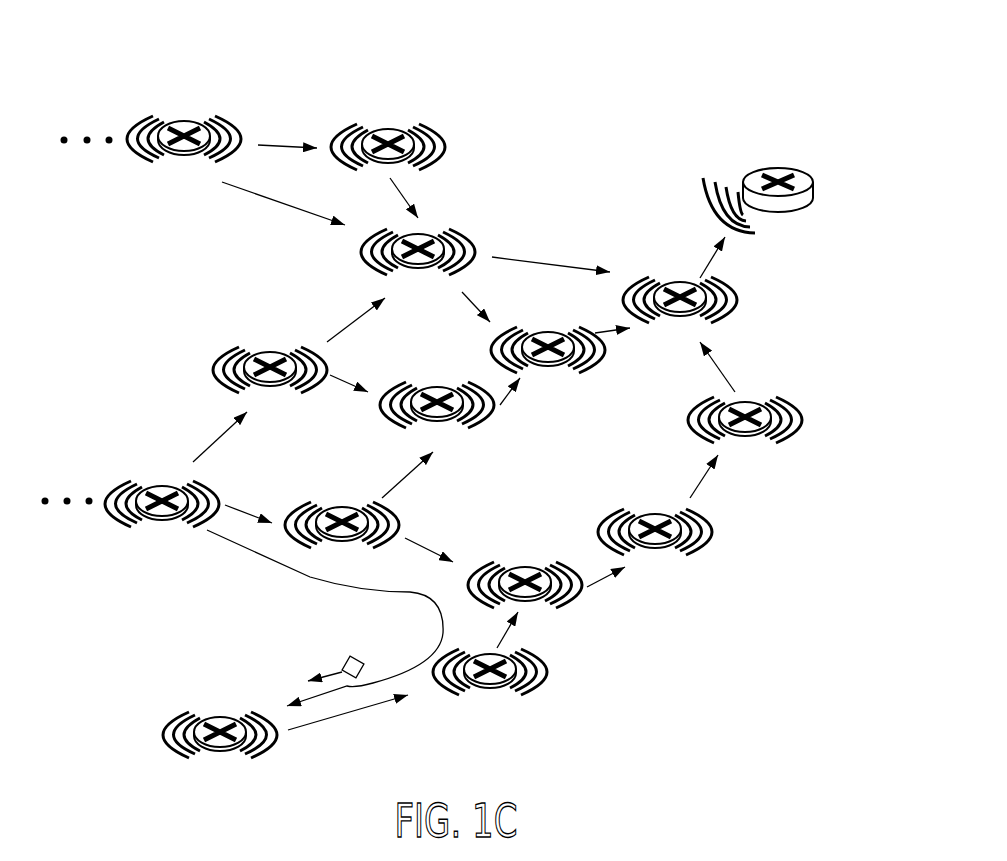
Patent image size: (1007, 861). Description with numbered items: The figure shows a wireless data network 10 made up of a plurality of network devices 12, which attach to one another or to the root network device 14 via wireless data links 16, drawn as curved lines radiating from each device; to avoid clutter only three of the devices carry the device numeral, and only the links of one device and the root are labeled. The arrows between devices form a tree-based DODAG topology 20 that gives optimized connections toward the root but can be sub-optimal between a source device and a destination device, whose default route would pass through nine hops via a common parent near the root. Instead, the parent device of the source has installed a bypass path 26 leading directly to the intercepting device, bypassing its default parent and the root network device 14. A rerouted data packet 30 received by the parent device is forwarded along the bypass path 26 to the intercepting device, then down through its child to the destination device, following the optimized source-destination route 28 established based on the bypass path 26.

The data network 10 is at (755, 82).
The network device 12 is at (548, 336).
The root network device 14 is at (807, 177).
The wireless data links 16 is at (701, 192).
The tree-based topology 20 is at (790, 487).
The bypass path 26 is at (435, 553).
The optimized source-destination route 28 is at (303, 577).
The rerouted data packet 30 is at (353, 657).